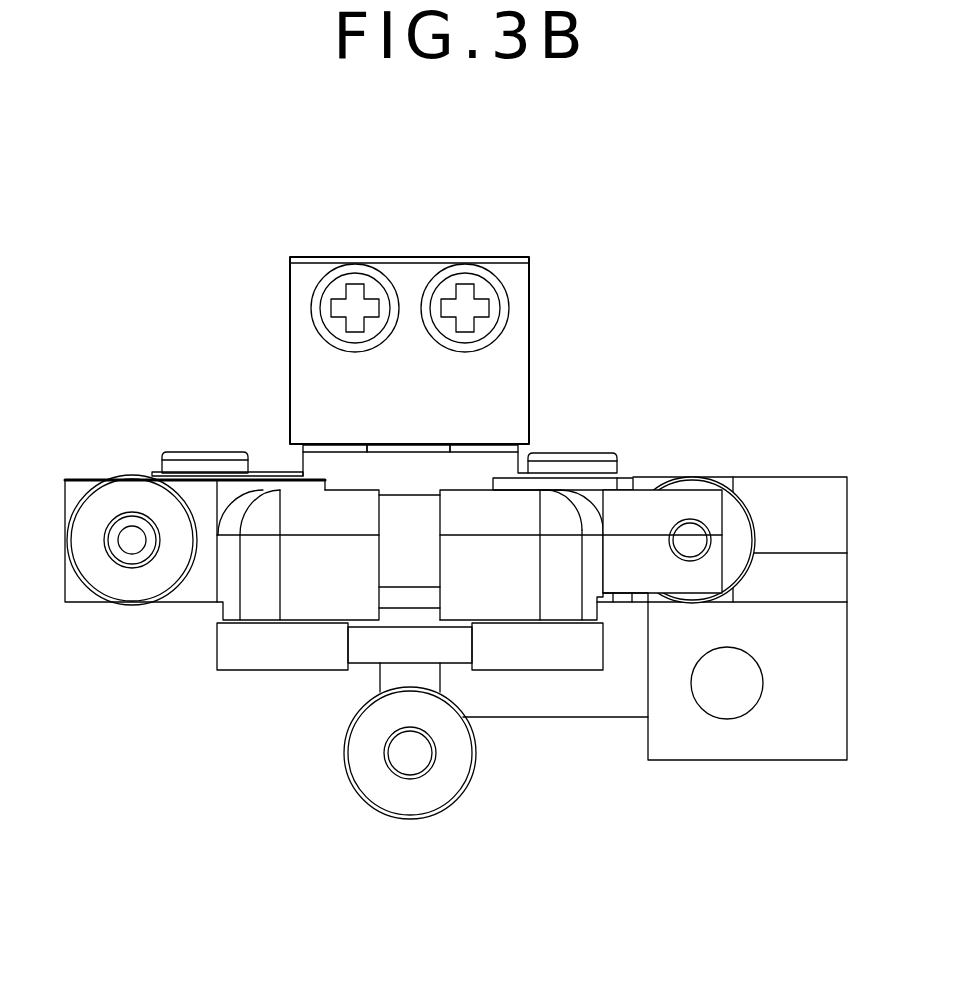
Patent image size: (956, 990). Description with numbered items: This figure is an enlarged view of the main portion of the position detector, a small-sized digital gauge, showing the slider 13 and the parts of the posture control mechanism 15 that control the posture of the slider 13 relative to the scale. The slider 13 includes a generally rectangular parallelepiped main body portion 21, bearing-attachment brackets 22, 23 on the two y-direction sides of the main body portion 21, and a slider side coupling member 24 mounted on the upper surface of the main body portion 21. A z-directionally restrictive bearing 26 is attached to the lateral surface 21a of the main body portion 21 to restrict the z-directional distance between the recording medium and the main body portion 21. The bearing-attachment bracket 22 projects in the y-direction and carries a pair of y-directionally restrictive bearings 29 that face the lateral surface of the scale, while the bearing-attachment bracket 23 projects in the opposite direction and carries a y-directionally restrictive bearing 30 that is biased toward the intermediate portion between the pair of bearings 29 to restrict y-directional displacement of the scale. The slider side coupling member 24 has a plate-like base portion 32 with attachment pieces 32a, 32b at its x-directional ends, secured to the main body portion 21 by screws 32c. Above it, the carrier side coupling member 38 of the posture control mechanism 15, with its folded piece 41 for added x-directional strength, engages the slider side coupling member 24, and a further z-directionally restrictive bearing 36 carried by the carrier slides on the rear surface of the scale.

The slider 13 is at (456, 553).
The posture control mechanism 15 is at (546, 278).
The main body portion 21 is at (227, 497).
The lateral surface 21a is at (678, 503).
The bearing-attachment bracket 22 is at (312, 590).
The bearing-attachment bracket 23 is at (808, 497).
The slider side coupling member 24 is at (477, 465).
The z-directionally restrictive bearing 26 is at (135, 580).
The y-directionally restrictive bearing 29 is at (250, 653).
The y-directionally restrictive bearing 30 is at (453, 655).
The base portion 32 is at (380, 397).
The attachment piece 32a is at (627, 475).
The attachment piece 32b is at (272, 470).
The screw 32c is at (190, 457).
The z-directionally restrictive bearing 36 is at (380, 782).
The carrier side coupling member 38 is at (382, 253).
The folded piece 41 is at (307, 292).